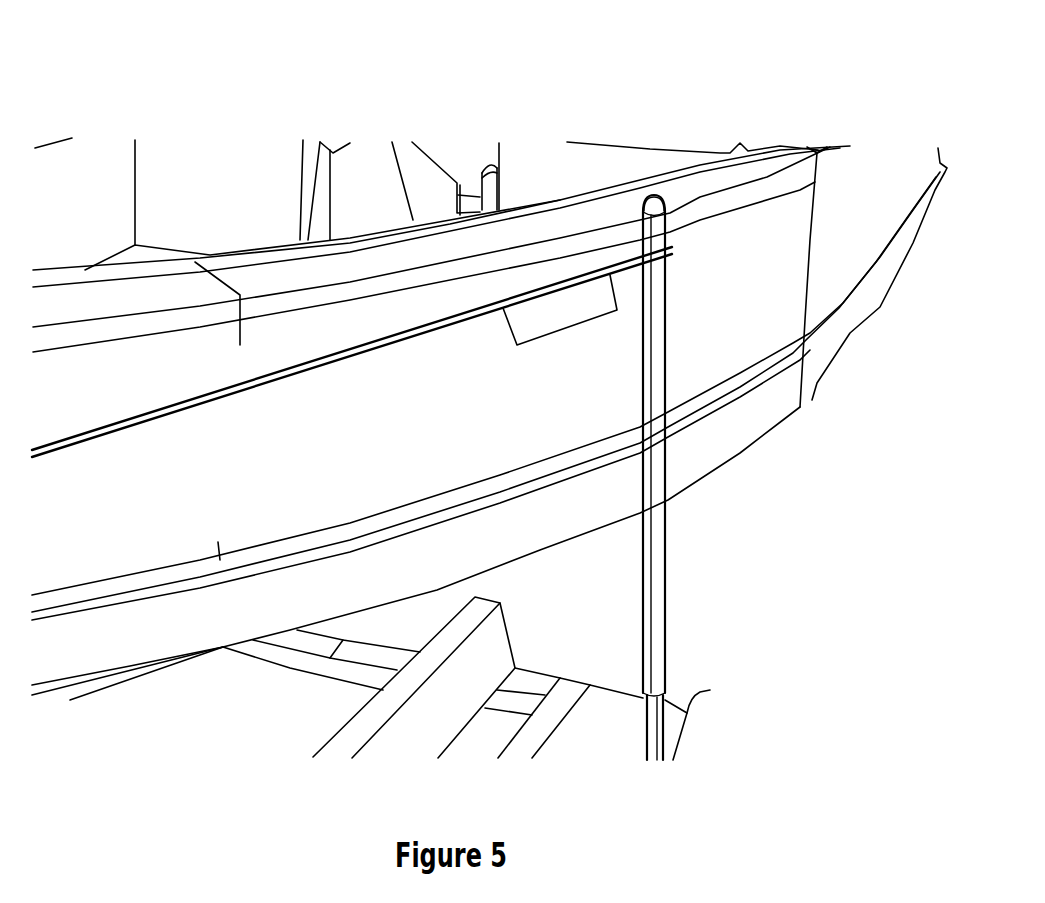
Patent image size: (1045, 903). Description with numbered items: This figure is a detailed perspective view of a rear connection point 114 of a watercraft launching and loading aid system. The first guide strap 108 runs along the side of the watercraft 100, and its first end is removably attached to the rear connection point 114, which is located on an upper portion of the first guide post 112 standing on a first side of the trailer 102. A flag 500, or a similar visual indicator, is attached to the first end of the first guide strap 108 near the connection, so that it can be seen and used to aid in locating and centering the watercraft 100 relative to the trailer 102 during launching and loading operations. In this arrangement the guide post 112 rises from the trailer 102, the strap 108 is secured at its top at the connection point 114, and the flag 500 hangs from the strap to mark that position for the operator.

The watercraft 100 is at (812, 378).
The first guide strap 108 is at (352, 238).
The first guide post 112 is at (667, 600).
The rear connection point 114 is at (678, 263).
The flag 500 is at (629, 408).
The trailer 102 is at (700, 693).